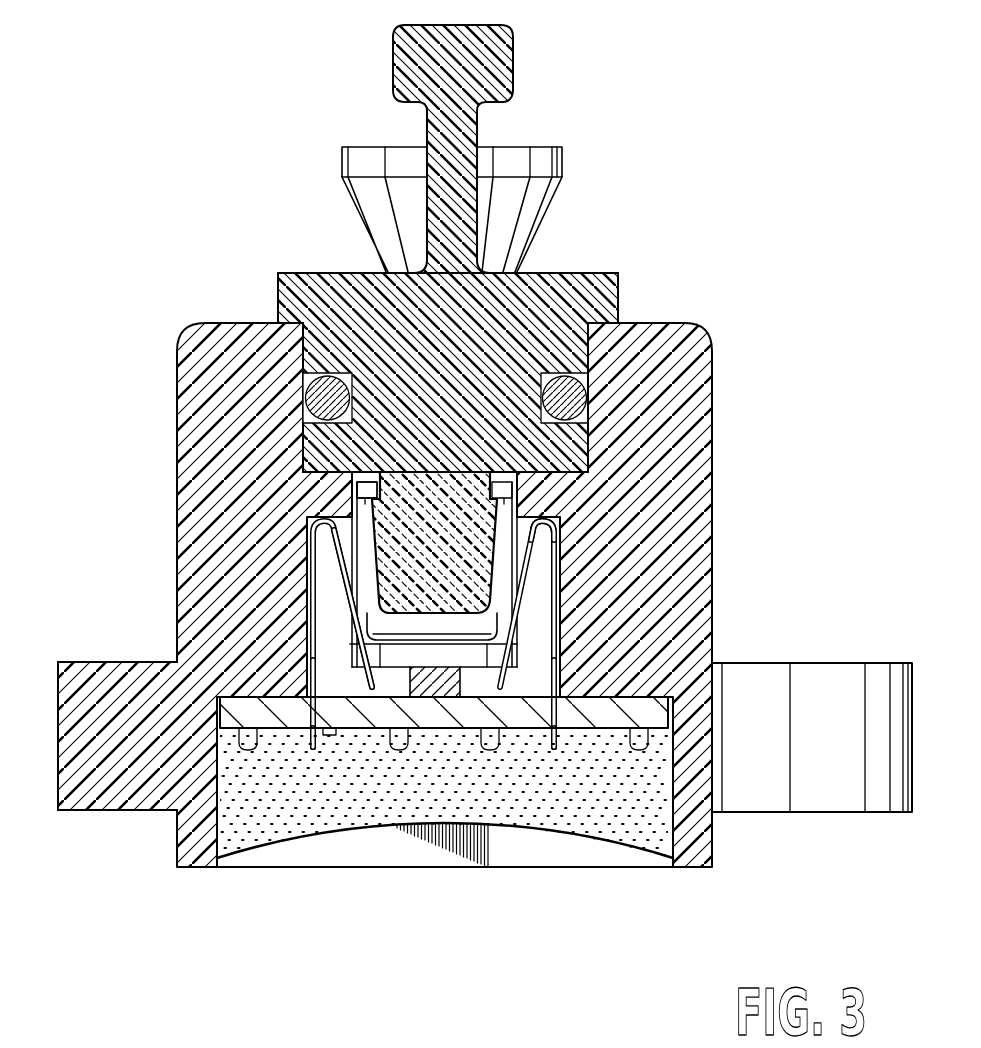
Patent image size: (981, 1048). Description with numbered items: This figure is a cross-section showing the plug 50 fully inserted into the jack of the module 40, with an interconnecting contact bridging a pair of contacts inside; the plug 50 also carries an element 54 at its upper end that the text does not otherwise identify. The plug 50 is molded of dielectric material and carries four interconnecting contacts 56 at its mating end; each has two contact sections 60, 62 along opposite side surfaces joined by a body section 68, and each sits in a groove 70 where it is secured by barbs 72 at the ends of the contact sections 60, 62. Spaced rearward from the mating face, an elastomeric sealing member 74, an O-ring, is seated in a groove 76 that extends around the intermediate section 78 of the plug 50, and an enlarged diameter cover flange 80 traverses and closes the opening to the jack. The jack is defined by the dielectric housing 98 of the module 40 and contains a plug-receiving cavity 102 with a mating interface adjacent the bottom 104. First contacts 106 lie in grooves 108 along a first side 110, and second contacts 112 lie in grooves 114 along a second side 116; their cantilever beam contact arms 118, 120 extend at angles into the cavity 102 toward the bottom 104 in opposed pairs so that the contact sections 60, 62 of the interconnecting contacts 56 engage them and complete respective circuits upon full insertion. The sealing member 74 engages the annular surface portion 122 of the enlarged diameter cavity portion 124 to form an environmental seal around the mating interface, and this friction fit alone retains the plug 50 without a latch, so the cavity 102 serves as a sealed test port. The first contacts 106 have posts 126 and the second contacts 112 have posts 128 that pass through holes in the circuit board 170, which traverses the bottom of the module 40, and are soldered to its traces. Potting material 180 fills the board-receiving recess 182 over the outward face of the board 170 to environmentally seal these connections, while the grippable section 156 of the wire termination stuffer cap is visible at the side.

The module 40 is at (168, 367).
The plug 50 is at (310, 260).
The stem and knob 54 is at (400, 68).
The interconnecting contacts 56 is at (425, 660).
The contact section 60 is at (380, 542).
The contact section 62 is at (483, 595).
The body section 68 is at (448, 648).
The grooves 70 is at (360, 470).
The barbs 72 is at (378, 481).
The sealing member 74 is at (560, 372).
The groove 76 is at (560, 373).
The intermediate section 78 is at (592, 460).
The cover flange 80 is at (297, 297).
The dielectric housing 98 is at (177, 455).
The plug-receiving cavity 102 is at (355, 592).
The bottom 104 is at (360, 640).
The first contacts 106 is at (328, 676).
The grooves 108 is at (318, 540).
The first side 110 is at (397, 498).
The second contacts 112 is at (560, 622).
The grooves 114 is at (557, 523).
The second side 116 is at (512, 541).
The cantilever beam contact arm 118 is at (336, 736).
The cantilever beam contact arm 120 is at (553, 675).
The annular surface portion 122 is at (590, 385).
The enlarged diameter cavity portion 124 is at (585, 343).
The posts 126 is at (310, 748).
The posts 128 is at (554, 750).
The grippable section 156 is at (553, 158).
The circuit board 170 is at (288, 748).
The potting material 180 is at (597, 818).
The board-receiving recess 182 is at (672, 840).